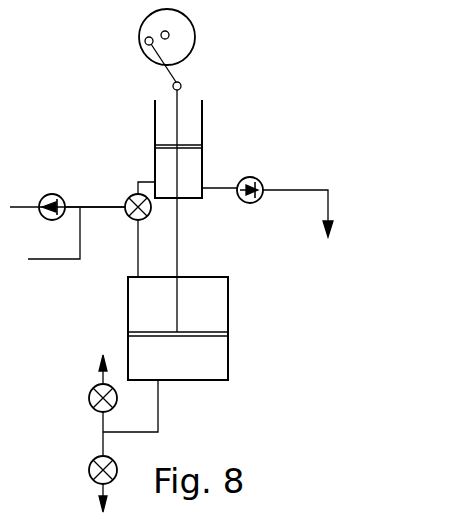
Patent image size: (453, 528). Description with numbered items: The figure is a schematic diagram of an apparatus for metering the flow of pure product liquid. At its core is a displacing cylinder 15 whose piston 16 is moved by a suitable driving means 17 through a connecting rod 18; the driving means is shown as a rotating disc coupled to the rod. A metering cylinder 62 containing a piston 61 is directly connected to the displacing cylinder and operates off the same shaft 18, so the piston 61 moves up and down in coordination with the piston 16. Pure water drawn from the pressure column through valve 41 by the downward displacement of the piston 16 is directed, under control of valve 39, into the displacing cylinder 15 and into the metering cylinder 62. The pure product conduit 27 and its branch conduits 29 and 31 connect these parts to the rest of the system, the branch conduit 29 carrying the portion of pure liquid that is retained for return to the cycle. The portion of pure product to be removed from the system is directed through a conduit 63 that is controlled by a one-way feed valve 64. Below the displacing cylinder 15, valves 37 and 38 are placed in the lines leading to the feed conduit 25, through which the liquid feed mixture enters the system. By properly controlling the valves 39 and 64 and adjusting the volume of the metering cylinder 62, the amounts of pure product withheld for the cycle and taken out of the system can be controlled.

The driving means 17 is at (180, 31).
The connecting rod 18 is at (178, 102).
The piston 61 is at (168, 143).
The metering cylinder 62 is at (167, 165).
The valve 41 is at (47, 194).
The branch conduit 29 is at (100, 204).
The valve 39 is at (130, 196).
The conduit 27 is at (80, 240).
The branch conduit 31 is at (138, 262).
The one-way feed valve 64 is at (259, 183).
The conduit 63 is at (307, 188).
The piston 16 is at (145, 332).
The displacing cylinder 15 is at (137, 350).
The valve 37 is at (89, 398).
The valve 38 is at (90, 460).
The conduit 25 is at (100, 492).